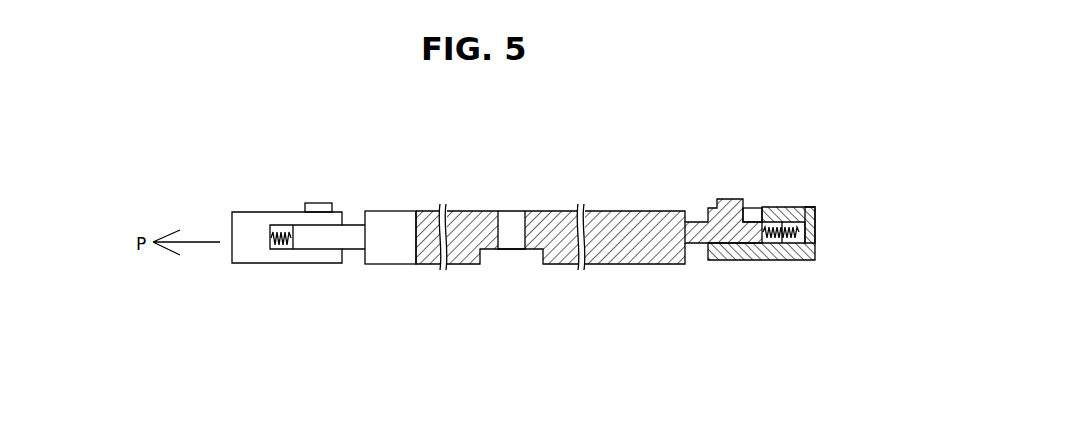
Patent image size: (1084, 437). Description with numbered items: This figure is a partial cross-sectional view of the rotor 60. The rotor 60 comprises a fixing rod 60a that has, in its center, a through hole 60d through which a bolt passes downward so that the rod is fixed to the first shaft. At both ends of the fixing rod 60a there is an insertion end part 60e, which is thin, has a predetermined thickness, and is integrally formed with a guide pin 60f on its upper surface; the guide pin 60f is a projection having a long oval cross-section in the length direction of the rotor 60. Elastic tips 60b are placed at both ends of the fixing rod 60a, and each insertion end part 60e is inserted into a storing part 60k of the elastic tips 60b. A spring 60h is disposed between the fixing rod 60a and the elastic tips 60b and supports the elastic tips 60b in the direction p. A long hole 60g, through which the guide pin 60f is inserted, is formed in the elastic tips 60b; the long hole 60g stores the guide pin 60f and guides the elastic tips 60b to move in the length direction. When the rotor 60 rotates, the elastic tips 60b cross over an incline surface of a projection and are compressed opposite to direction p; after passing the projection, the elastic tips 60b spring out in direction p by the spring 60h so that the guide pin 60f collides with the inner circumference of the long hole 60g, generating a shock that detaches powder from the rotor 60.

The rotor 60 is at (670, 189).
The fixing rod 60a is at (470, 214).
The elastic tips 60b is at (250, 221).
The through hole 60d is at (515, 221).
The insertion end part 60e is at (313, 240).
The guide pin 60f is at (322, 208).
The long hole 60g is at (753, 213).
The spring 60h is at (273, 250).
The storing part 60k is at (803, 209).